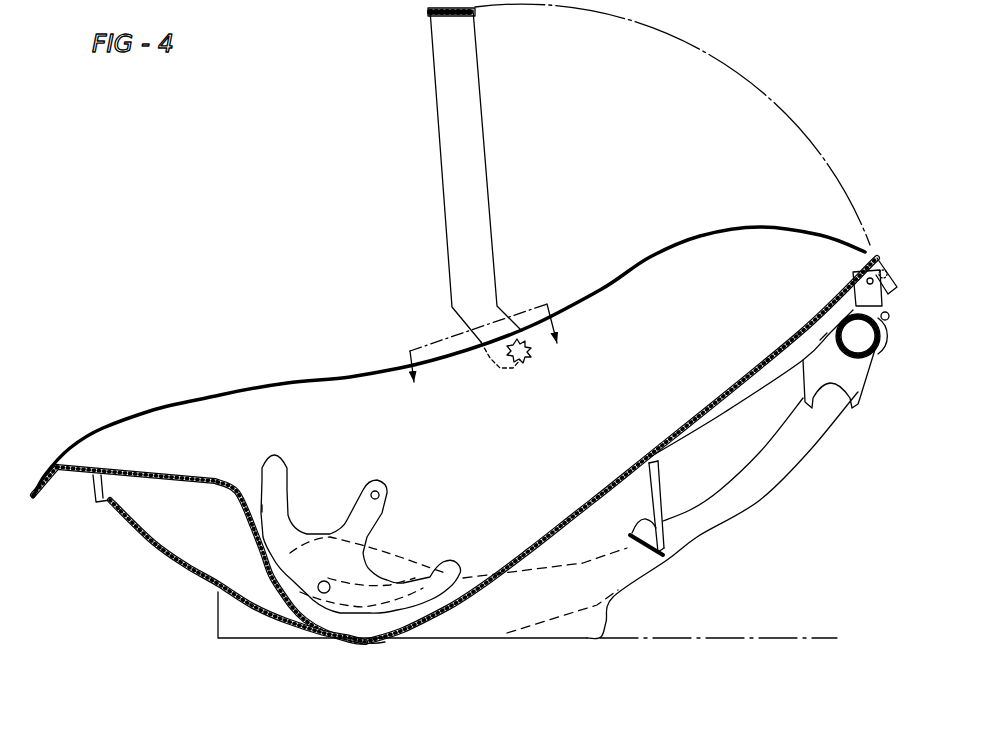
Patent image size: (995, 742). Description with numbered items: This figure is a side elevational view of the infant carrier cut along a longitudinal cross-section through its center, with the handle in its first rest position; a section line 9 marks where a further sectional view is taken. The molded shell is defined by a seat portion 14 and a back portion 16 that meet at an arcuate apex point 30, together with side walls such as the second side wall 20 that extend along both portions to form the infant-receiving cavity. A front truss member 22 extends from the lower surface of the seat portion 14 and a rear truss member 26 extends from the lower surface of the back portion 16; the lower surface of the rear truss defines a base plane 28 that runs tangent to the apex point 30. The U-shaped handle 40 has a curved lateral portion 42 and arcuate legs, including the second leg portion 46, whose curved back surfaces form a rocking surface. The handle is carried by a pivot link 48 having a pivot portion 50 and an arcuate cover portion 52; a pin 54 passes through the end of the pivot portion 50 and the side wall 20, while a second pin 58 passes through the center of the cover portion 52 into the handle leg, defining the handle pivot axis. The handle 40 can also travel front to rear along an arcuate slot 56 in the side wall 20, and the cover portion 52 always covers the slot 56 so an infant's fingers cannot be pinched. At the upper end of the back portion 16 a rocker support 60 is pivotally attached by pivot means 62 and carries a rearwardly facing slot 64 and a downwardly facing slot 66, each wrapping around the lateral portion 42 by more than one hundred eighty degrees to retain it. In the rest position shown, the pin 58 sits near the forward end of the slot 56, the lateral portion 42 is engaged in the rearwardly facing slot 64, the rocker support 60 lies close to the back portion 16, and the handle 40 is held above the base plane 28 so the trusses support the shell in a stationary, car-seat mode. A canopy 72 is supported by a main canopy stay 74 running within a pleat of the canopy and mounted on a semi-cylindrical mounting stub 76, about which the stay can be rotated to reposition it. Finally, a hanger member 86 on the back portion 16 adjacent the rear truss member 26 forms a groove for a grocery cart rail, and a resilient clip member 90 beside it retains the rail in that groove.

The section line 9- 9 is at (478, 330).
The seat portion 14 is at (220, 488).
The back portion 16 is at (633, 473).
The second side wall 20 is at (355, 393).
The front truss member 22 is at (218, 617).
The rear truss member 26 is at (608, 623).
The base plane 28 is at (680, 640).
The arcuate apex point 30 is at (382, 644).
The U-shaped handle 40 is at (684, 563).
The curved lateral portion 42 is at (845, 295).
The second leg portion 46 is at (676, 535).
The pivot link 48 is at (259, 481).
The pivot portion 50 is at (360, 517).
The arcuate cover portion 52 is at (273, 506).
The pin 54 is at (380, 493).
The arcuate slot 56 is at (408, 572).
The second pin 58 is at (318, 597).
The rocker support 60 is at (868, 383).
The pivot means 62 is at (882, 253).
The rearwardly facing slot 64 is at (822, 333).
The downwardly facing slot 66 is at (813, 387).
The canopy 72 is at (765, 62).
The main canopy stay 74 is at (445, 48).
The semi-cylindrical mounting stub 76 is at (528, 364).
The hanger member 86 is at (666, 522).
The resilient clip member 90 is at (664, 505).